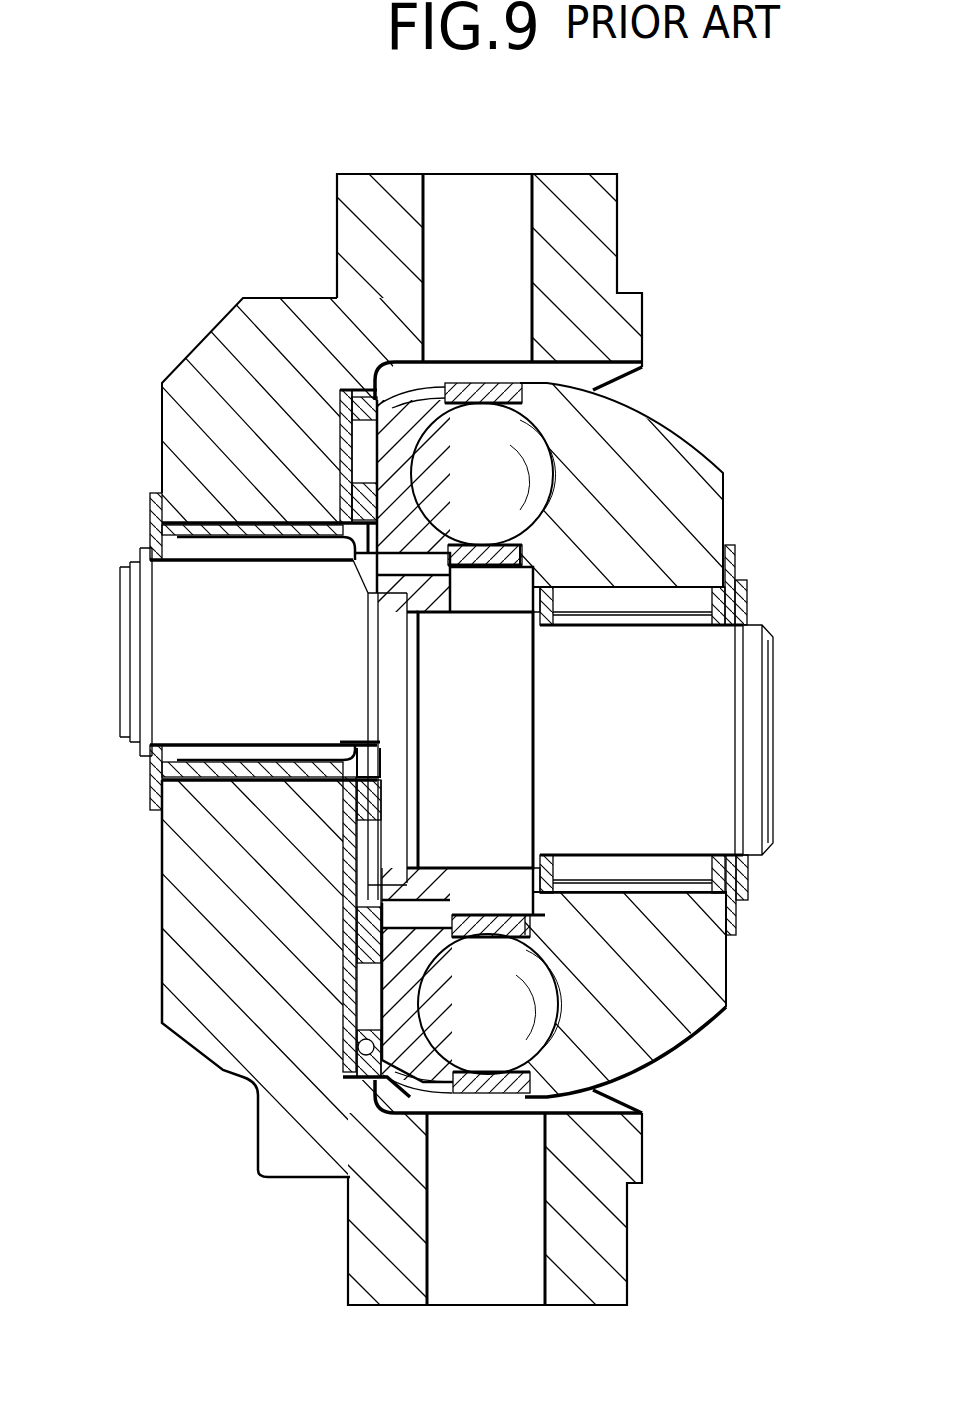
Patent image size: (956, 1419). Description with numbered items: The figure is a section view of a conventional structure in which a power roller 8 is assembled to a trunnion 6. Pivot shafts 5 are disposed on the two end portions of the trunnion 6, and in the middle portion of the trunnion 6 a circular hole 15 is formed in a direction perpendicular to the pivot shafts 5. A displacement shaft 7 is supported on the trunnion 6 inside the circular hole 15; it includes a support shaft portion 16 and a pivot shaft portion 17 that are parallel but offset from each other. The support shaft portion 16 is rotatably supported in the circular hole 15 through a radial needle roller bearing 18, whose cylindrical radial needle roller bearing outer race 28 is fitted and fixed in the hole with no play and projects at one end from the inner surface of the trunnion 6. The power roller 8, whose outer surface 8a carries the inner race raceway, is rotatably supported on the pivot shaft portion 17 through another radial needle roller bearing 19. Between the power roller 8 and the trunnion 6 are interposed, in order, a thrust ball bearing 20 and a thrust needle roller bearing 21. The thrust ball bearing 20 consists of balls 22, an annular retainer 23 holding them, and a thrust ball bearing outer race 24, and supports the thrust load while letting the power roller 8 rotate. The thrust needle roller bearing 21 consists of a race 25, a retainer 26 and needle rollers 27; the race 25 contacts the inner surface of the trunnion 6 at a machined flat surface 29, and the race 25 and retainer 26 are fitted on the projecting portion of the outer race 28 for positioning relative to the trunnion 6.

The pivot shaft 5 is at (572, 190).
The trunnion 6 is at (167, 380).
The displacement shaft 7 is at (520, 683).
The power roller 8 is at (683, 1030).
The outer ring spherical surface 8a is at (655, 1062).
The circular hole 15 is at (207, 550).
The support shaft portion 16 is at (165, 656).
The pivot shaft portion 17 is at (720, 760).
The radial needle roller bearing 18 is at (262, 752).
The radial needle roller bearing 19 is at (636, 870).
The thrust ball bearing 20 is at (540, 460).
The thrust needle roller bearing 21 is at (335, 435).
The ball 22 is at (532, 455).
The retainer 23 is at (503, 395).
The thrust ball bearing outer race 24 is at (410, 1090).
The race 25 is at (345, 1010).
The retainer 26 is at (395, 408).
The needle roller 27 is at (360, 437).
The radial needle roller bearing outer race 28 is at (220, 777).
The flat surface 29 is at (350, 1065).